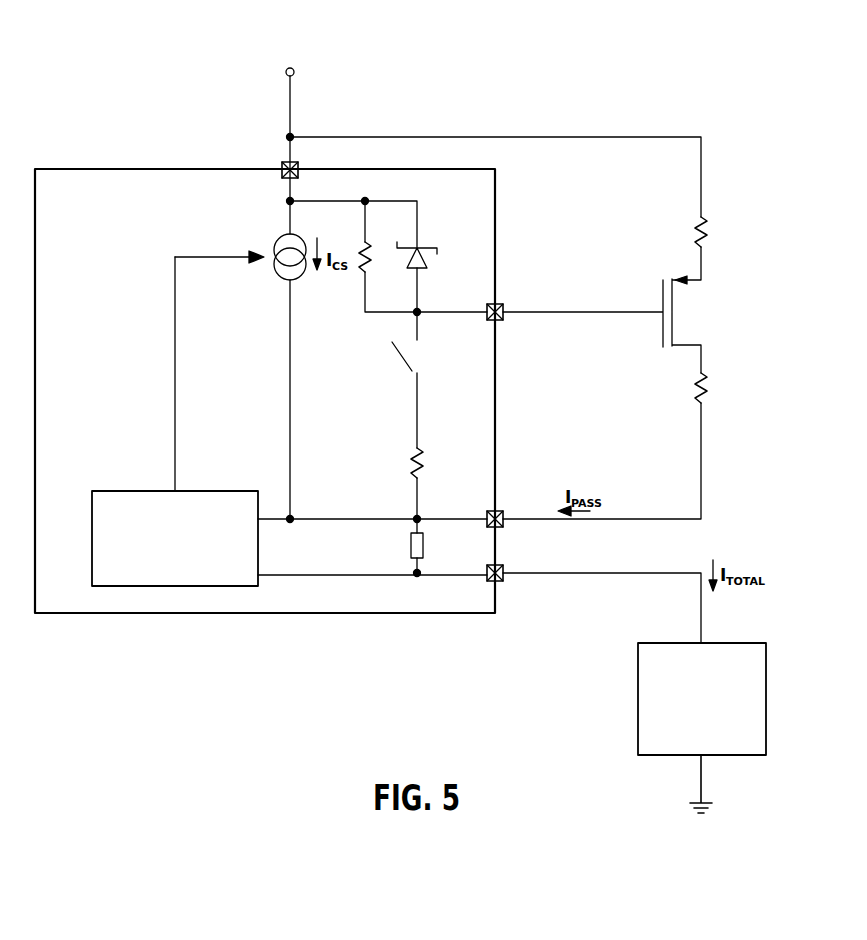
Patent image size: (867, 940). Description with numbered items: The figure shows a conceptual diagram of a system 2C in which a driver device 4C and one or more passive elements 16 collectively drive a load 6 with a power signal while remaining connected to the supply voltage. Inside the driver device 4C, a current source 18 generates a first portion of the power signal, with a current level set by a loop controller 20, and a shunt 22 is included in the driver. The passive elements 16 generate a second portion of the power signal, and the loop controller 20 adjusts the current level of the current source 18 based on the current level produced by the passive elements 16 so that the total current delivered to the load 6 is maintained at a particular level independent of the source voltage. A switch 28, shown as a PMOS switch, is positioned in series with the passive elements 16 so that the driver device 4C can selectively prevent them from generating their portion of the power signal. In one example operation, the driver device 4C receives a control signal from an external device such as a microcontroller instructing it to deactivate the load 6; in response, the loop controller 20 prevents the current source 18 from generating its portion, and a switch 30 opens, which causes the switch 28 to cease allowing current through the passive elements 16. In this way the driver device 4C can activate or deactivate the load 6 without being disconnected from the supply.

The system 2C is at (98, 59).
The driver device 4C is at (269, 387).
The load 6 is at (702, 728).
The passive elements 16 is at (710, 221).
The current source 18 is at (276, 238).
The loop controller 20 is at (289, 421).
The shunt 22 is at (406, 552).
The switch 28 is at (660, 297).
The switch 30 is at (402, 358).